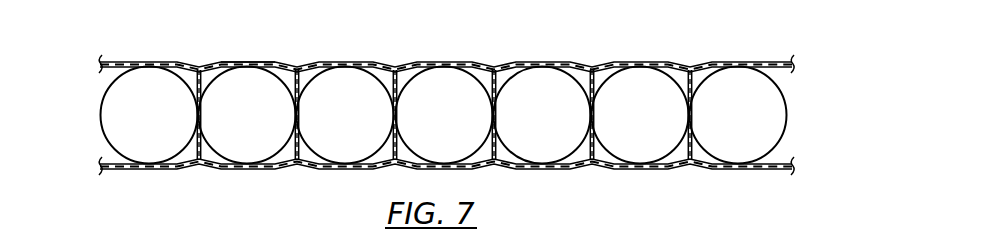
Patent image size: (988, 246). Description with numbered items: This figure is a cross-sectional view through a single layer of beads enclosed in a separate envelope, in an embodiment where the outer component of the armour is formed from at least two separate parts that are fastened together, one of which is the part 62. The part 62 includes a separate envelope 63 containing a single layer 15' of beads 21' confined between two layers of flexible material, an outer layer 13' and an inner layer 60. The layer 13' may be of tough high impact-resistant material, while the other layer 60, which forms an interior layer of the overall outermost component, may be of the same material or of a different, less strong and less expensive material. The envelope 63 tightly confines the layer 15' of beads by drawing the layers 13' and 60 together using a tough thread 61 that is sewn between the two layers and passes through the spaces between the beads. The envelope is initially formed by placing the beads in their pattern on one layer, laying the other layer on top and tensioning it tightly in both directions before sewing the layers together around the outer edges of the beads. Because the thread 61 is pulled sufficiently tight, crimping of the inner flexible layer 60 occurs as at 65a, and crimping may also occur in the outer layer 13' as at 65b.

The part 62 is at (88, 97).
The envelope 63 is at (238, 62).
The crimping 65b is at (297, 72).
The crimping 65a is at (301, 167).
The beads 21' is at (466, 93).
The layer of flexible material 13' is at (446, 46).
The tough thread 61 is at (592, 158).
The layer of flexible material 60 is at (651, 167).
The single layer of beads 15' is at (131, 146).